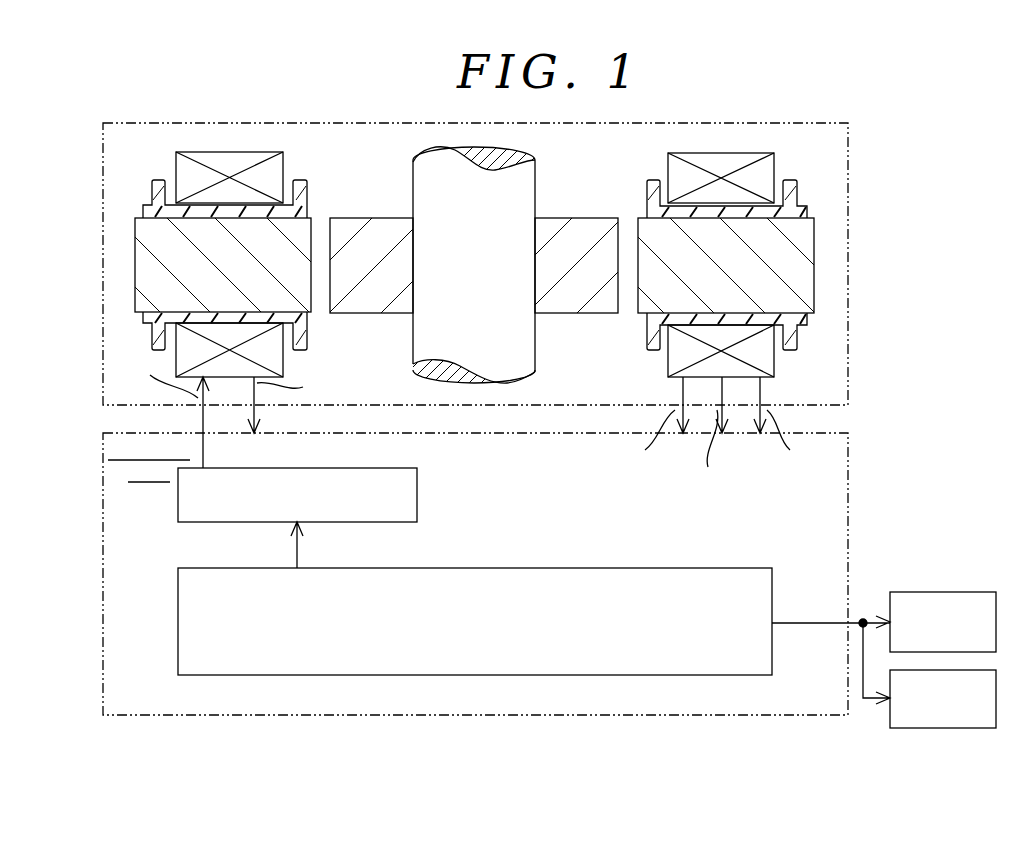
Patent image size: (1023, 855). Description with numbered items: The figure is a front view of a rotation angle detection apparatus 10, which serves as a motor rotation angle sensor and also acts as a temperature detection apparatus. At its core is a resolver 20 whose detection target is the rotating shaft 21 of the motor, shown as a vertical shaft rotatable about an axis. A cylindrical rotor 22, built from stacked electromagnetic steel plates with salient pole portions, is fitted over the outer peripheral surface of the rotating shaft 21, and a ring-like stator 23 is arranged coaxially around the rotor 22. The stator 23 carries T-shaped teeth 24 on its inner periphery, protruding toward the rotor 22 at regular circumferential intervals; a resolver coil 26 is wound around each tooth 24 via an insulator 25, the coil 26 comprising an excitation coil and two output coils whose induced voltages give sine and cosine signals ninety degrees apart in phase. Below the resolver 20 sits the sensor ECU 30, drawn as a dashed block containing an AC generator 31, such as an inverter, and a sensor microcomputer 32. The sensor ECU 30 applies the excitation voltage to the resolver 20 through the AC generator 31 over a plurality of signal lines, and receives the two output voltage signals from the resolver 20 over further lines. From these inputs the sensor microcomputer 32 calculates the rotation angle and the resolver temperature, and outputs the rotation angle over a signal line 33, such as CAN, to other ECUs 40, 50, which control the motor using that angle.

The rotation angle detection apparatus 10 is at (920, 155).
The resolver 20 is at (850, 293).
The rotating shaft 21 is at (528, 180).
The rotor 22 is at (542, 227).
The stator 23 is at (831, 254).
The teeth 24 is at (802, 230).
The insulator 25 is at (792, 328).
The resolver coil 26 is at (763, 357).
The sensor ECU 30 is at (848, 455).
The AC generator 31 is at (417, 488).
The sensor microcomputer 32 is at (628, 568).
The signal line 33 is at (808, 627).
The ECU 40 is at (945, 592).
The ECU 50 is at (946, 728).